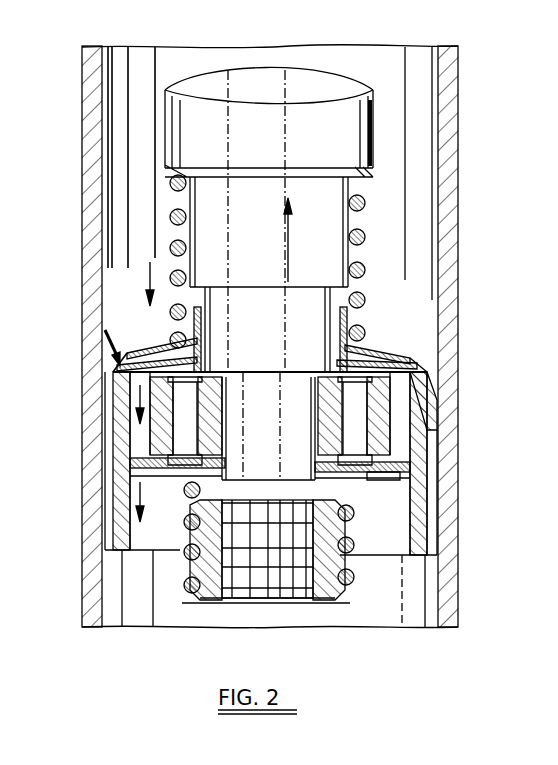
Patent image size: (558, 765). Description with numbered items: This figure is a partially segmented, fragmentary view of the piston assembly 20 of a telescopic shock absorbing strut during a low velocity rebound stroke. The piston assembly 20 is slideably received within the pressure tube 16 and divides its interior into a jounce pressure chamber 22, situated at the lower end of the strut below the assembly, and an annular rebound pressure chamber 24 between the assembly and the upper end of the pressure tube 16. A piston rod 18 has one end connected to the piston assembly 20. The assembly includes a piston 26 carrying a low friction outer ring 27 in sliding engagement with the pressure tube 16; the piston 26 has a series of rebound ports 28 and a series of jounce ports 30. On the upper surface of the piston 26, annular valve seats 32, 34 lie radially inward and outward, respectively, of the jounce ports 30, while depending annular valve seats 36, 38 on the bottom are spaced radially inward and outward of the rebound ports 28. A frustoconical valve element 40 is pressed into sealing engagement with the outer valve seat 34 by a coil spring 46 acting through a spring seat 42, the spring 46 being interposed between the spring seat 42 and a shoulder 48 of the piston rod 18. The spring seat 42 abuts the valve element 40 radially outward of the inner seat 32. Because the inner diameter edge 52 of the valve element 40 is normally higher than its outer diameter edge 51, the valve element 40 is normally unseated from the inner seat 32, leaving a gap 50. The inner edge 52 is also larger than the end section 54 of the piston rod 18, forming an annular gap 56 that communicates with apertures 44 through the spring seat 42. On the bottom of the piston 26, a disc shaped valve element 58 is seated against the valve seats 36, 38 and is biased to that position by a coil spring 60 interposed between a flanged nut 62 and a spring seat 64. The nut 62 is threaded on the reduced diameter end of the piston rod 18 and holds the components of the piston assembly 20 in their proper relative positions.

The pressure tube 16 is at (455, 122).
The piston rod 18 is at (355, 118).
The piston assembly 20 is at (105, 330).
The jounce pressure chamber 22 is at (425, 615).
The rebound pressure chamber 24 is at (420, 218).
The piston 26 is at (455, 430).
The low friction outer ring 27 is at (112, 390).
The rebound ports 28 is at (190, 428).
The jounce ports 30 is at (425, 392).
The inner annular valve seat 32 is at (210, 388).
The outer annular valve seat 34 is at (120, 376).
The inner depending annular valve seat 36 is at (215, 452).
The outer depending annular valve seat 38 is at (362, 470).
The frustoconical valve element 40 is at (395, 368).
The spring seat 42 is at (430, 310).
The apertures 44 is at (140, 352).
The coil spring 46 is at (362, 206).
The shoulder 48 is at (165, 175).
The gap 50 is at (400, 425).
The outer diameter edge 51 is at (418, 385).
The inner diameter edge 52 is at (320, 383).
The end section 54 is at (245, 310).
The annular gap 56 is at (334, 378).
The disc shaped valve element 58 is at (420, 520).
The coil spring 60 is at (348, 555).
The flanged nut 62 is at (335, 602).
The spring seat 64 is at (392, 545).